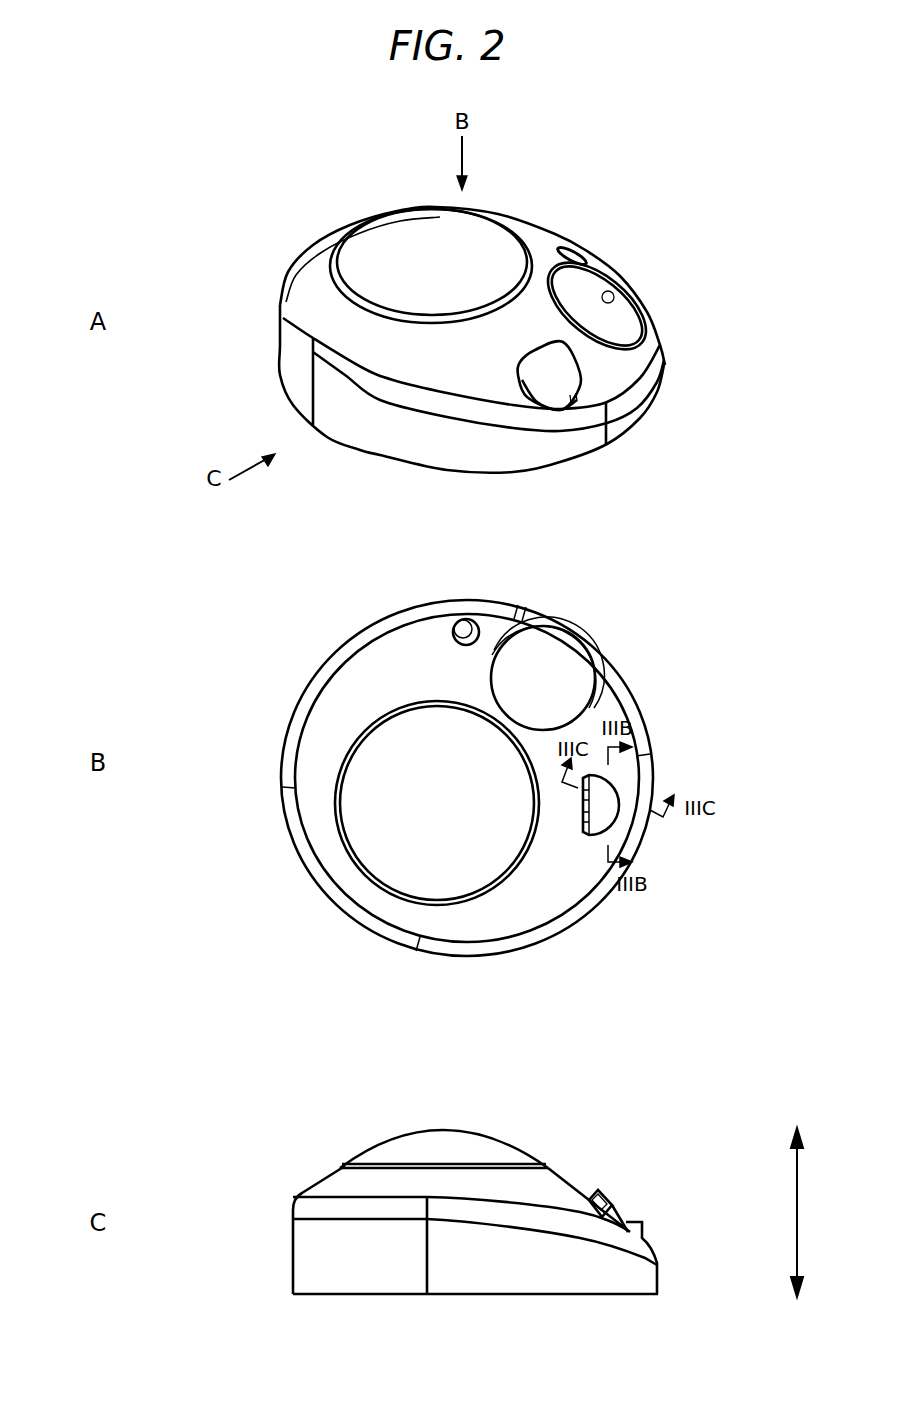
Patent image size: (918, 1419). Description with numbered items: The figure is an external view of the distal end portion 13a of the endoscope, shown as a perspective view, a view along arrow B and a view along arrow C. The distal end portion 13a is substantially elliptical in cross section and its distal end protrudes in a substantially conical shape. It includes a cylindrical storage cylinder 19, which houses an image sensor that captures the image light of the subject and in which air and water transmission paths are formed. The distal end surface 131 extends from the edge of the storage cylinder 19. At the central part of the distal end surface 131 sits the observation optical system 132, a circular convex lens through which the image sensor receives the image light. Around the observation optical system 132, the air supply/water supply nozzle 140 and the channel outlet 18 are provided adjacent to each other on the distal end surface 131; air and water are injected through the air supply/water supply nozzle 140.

The distal end portion 13a is at (701, 294).
The distal end surface 131 is at (315, 272).
The observation optical system 132 is at (381, 246).
The channel outlet 18 is at (622, 300).
The storage cylinder 19 is at (287, 360).
The air supply/water supply nozzle 140 is at (565, 372).